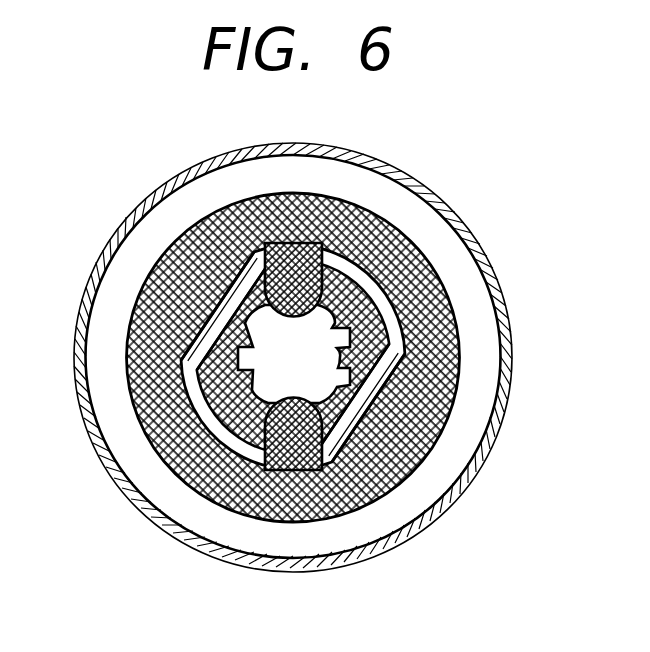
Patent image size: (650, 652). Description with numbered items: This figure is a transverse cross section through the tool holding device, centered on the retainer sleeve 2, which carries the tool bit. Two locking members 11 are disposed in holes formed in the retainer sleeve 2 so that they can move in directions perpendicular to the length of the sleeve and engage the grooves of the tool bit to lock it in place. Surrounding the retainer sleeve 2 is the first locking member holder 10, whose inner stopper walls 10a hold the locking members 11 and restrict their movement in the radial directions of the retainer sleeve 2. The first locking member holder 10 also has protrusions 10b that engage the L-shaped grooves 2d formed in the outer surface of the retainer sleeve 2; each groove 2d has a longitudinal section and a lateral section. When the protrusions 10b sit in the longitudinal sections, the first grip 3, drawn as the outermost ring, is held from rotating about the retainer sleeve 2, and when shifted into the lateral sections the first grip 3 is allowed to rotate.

The retainer sleeve 2 is at (208, 382).
The groove 2d is at (214, 282).
The first hand-operated grip 3 is at (441, 206).
The first locking member holder 10 is at (440, 368).
The stopper wall 10a is at (386, 302).
The protrusion 10b is at (162, 262).
The locking member 11 is at (300, 258).